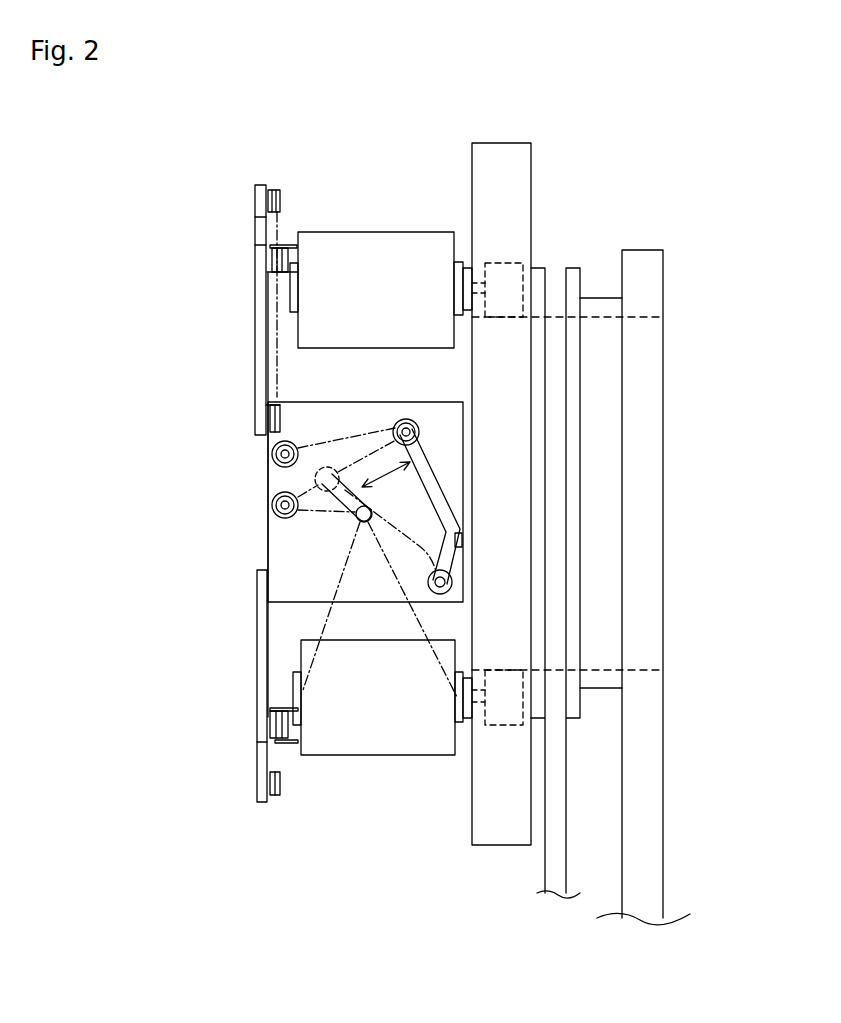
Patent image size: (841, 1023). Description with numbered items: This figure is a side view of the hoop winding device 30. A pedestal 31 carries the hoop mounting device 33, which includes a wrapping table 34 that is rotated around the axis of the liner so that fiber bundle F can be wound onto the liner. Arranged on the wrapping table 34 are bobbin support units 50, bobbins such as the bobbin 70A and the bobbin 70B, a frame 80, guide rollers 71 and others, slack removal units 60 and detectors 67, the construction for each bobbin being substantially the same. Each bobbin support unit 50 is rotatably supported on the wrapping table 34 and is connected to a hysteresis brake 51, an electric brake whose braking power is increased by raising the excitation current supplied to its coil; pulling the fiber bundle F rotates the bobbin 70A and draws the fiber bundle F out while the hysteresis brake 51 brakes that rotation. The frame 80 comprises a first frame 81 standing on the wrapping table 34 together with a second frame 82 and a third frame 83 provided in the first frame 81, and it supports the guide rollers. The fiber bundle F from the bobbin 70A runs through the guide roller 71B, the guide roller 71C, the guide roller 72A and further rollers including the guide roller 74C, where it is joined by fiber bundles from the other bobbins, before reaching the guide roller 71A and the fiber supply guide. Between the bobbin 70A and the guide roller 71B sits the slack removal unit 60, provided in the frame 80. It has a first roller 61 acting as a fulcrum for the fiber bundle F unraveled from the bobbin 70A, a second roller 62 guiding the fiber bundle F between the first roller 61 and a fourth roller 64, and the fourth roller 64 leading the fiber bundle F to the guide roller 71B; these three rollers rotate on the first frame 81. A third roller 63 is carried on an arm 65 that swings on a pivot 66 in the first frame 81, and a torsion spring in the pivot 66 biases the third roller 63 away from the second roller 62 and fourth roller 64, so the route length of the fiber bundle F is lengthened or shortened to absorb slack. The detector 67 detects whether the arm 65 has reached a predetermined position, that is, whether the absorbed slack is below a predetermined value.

The hoop winding device 30 is at (440, 76).
The hoop mounting device 33 is at (400, 146).
The wrapping table 34 is at (500, 150).
The pedestal 31 is at (640, 262).
The hysteresis brake 51 is at (508, 263).
The bobbin support unit 50 is at (459, 262).
The bobbin 70B is at (372, 248).
The bobbin 70A is at (372, 745).
The third frame 83 is at (255, 308).
The second frame 82 is at (257, 675).
The guide roller 72A is at (262, 192).
The guide roller 71C is at (265, 250).
The second roller 62 is at (290, 245).
The guide roller 71 is at (206, 274).
The fiber bundle F is at (277, 352).
The guide roller 71B is at (268, 408).
The fourth roller 64 is at (272, 454).
The slack removal unit 60 is at (178, 480).
The frame 80 is at (245, 545).
The first frame 81 is at (360, 420).
The third roller 63 is at (414, 425).
The arm 65 is at (422, 462).
The first roller 61 is at (358, 522).
The detector 67 is at (462, 542).
The pivot 66 is at (452, 580).
The guide roller 71A is at (270, 716).
The guide roller 74C is at (265, 773).